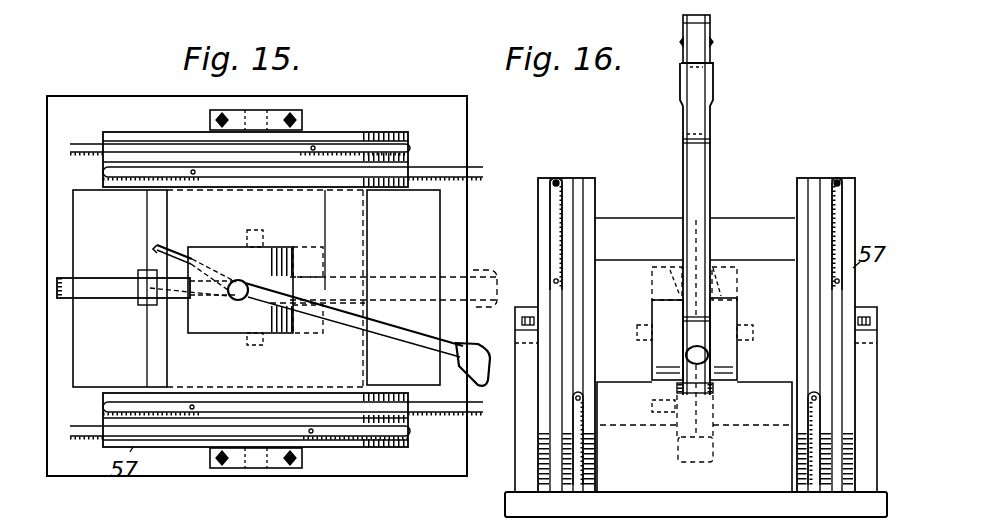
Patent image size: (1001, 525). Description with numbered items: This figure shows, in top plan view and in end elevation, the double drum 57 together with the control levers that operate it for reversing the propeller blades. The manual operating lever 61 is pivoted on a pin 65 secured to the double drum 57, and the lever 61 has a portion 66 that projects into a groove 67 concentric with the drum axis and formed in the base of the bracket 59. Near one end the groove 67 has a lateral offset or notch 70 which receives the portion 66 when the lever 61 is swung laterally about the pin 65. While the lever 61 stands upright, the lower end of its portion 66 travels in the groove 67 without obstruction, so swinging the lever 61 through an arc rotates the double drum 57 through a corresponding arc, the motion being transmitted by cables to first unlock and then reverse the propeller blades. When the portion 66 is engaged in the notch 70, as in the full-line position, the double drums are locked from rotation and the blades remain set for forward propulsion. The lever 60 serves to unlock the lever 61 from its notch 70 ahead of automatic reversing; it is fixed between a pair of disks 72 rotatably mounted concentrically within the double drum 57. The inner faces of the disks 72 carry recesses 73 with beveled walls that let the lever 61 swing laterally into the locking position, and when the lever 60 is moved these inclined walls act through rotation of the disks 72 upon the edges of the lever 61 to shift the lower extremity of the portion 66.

In FIG. 15, the double drum 57 is at (148, 128).
In FIG. 16, the double drum 57 is at (538, 243).
In FIG. 15, the bracket 59 is at (262, 110).
In FIG. 16, the bracket 59 is at (525, 307).
In FIG. 16, the lever 60 is at (700, 165).
In FIG. 15, the manual operating lever 61 is at (409, 340).
In FIG. 16, the manual operating lever 61 is at (712, 143).
In FIG. 15, the pin 65 is at (232, 299).
In FIG. 16, the pin 65 is at (735, 357).
In FIG. 15, the portion 66 is at (170, 256).
In FIG. 15, the groove 67 is at (143, 307).
In FIG. 15, the notch 70 is at (156, 249).
In FIG. 16, the disks 72 is at (664, 360).
In FIG. 16, the recesses 73 is at (672, 298).